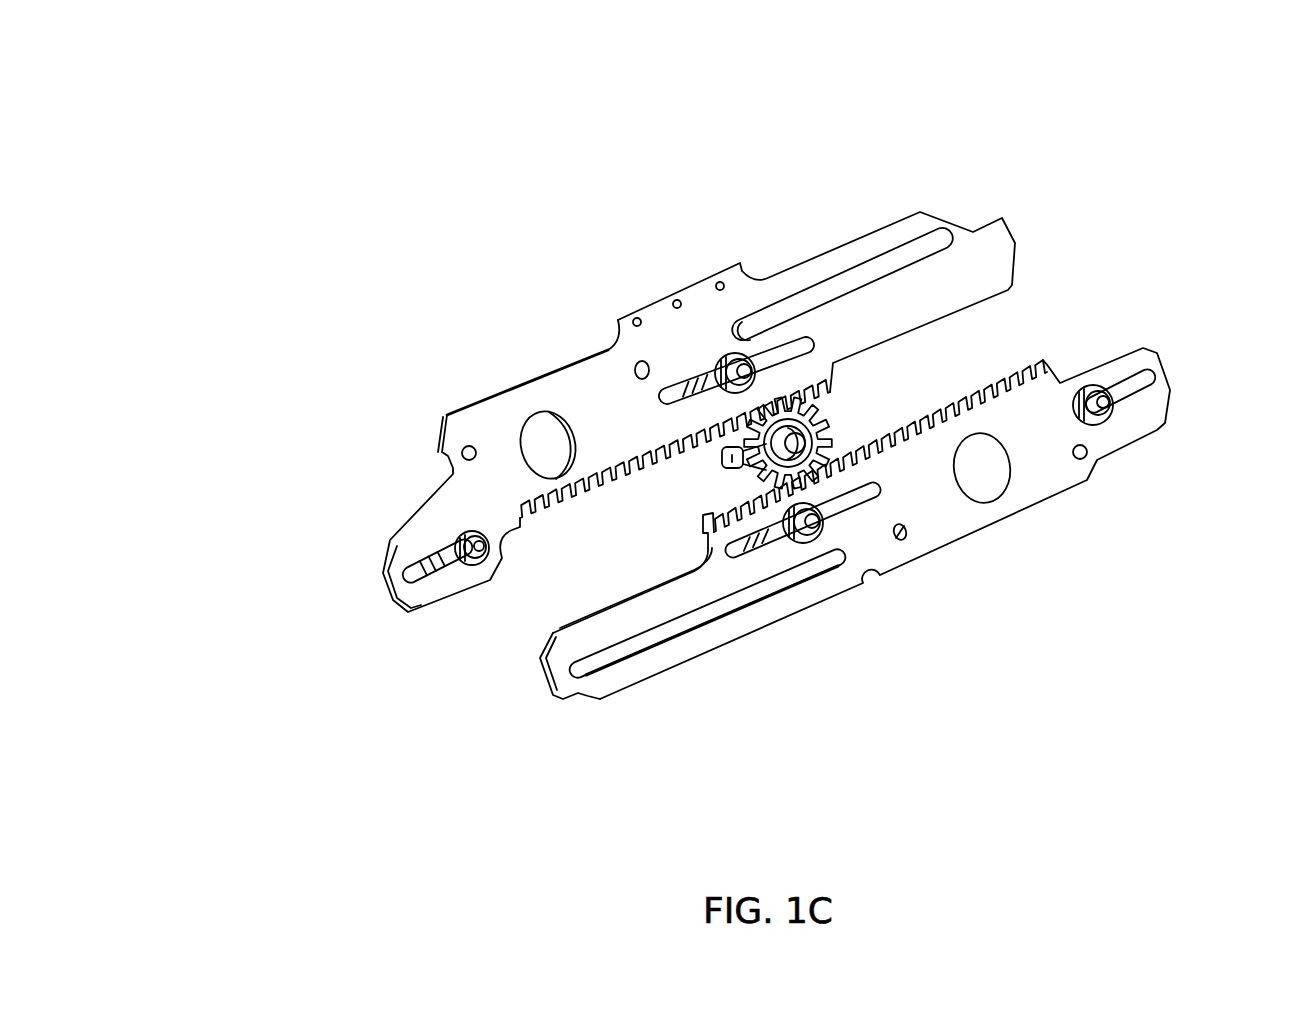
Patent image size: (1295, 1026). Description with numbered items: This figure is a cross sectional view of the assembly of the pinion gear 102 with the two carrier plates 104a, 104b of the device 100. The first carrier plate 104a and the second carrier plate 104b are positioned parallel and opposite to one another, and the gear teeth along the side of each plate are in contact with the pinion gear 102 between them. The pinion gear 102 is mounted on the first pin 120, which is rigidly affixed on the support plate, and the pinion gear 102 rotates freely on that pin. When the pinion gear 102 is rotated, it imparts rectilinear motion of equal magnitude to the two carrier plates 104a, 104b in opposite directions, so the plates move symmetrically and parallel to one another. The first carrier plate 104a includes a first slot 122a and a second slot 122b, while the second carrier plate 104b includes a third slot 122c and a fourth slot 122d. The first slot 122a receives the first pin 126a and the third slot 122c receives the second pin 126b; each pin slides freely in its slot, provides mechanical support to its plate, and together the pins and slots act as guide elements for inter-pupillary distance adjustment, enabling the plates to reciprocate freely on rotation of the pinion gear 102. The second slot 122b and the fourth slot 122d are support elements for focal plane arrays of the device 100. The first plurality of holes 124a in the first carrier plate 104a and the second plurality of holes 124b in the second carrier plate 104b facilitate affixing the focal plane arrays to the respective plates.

The device 100 is at (126, 43).
The pinion gear 102 is at (760, 455).
The first carrier plate 104a is at (932, 292).
The second carrier plate 104b is at (622, 618).
The first pin 120 is at (807, 410).
The first slot 122a is at (683, 393).
The second slot 122b is at (866, 278).
The third slot 122c is at (840, 503).
The fourth slot 122d is at (700, 613).
The first plurality of holes 124a is at (468, 446).
The second plurality of holes 124b is at (1086, 456).
The first pin 126a is at (468, 540).
The second pin 126b is at (1097, 402).